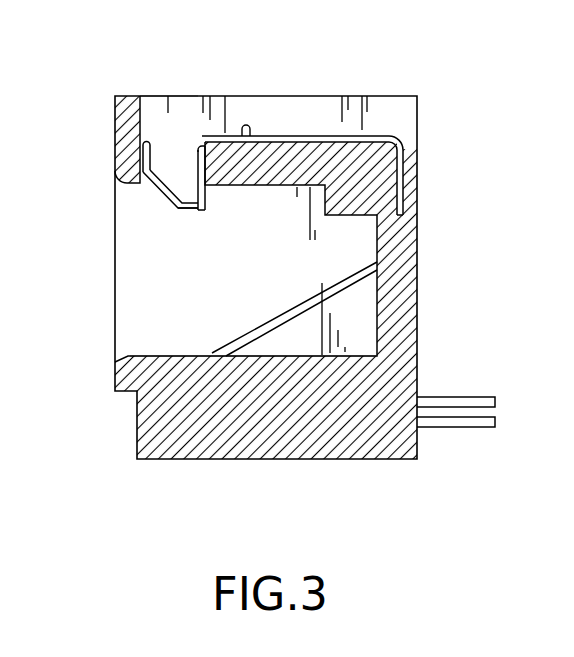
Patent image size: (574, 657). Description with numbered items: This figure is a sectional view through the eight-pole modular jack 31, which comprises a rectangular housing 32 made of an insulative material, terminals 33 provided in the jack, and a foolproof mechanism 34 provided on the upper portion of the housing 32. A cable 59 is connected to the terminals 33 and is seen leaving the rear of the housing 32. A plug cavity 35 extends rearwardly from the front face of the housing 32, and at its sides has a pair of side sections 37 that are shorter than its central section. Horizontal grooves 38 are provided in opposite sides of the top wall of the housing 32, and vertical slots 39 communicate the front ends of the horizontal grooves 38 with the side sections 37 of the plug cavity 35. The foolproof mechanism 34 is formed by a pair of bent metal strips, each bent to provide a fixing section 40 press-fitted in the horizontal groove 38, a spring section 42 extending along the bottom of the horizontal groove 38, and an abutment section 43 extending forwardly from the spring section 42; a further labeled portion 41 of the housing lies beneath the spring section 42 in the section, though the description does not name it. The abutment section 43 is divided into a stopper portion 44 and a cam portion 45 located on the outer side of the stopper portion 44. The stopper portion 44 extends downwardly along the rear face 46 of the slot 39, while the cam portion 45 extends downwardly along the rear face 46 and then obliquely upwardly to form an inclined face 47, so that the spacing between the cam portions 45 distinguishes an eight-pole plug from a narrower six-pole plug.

The eight-pole modular jack 31 is at (436, 120).
The rectangular housing 32 is at (289, 423).
The terminals 33 is at (345, 287).
The foolproof mechanism 34 is at (339, 147).
The plug cavity 35 is at (221, 326).
The side sections 37 is at (121, 202).
The horizontal grooves 38 is at (238, 117).
The vertical slots 39 is at (172, 162).
The fixing section 40 is at (400, 197).
The upper housing block 41 is at (238, 186).
The spring section 42 is at (325, 140).
The abutment section 43 is at (136, 151).
The stopper portion 44 is at (206, 192).
The cam portion 45 is at (184, 212).
The rear face 46 is at (197, 165).
The inclined face 47 is at (163, 197).
The cable 59 is at (471, 398).